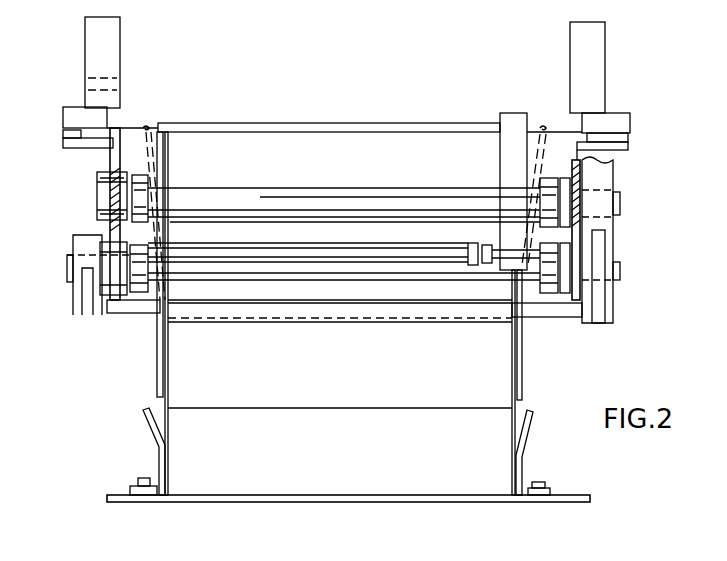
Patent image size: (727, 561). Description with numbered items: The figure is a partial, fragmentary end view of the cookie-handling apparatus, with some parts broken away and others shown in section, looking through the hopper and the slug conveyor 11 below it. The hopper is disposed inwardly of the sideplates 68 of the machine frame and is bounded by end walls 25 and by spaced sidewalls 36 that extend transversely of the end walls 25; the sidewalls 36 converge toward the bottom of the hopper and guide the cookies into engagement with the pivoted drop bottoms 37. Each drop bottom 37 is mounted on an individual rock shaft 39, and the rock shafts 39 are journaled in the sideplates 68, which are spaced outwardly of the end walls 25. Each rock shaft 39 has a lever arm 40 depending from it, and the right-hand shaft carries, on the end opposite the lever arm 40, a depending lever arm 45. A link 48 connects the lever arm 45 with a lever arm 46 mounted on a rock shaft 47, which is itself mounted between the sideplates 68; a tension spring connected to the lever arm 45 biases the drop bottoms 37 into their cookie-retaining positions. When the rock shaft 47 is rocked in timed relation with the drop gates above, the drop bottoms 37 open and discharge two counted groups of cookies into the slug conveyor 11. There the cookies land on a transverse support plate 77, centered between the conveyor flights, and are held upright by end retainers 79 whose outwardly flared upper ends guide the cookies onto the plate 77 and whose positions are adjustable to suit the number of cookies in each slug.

The slug conveyor 11 is at (572, 482).
The end walls of the hopper 25 is at (146, 127).
The sidewalls of the hopper 36 is at (330, 123).
The drop bottoms 37 is at (420, 322).
The rock shafts 39 is at (345, 282).
The lever arm 40 is at (72, 300).
The lever arm 45 is at (615, 293).
The lever arm 46 is at (605, 227).
The rock shaft 47 is at (330, 188).
The link 48 is at (597, 302).
The sideplates of the frame 68 is at (110, 150).
The transverse plate 77 is at (290, 500).
The end retainers 79 is at (143, 430).